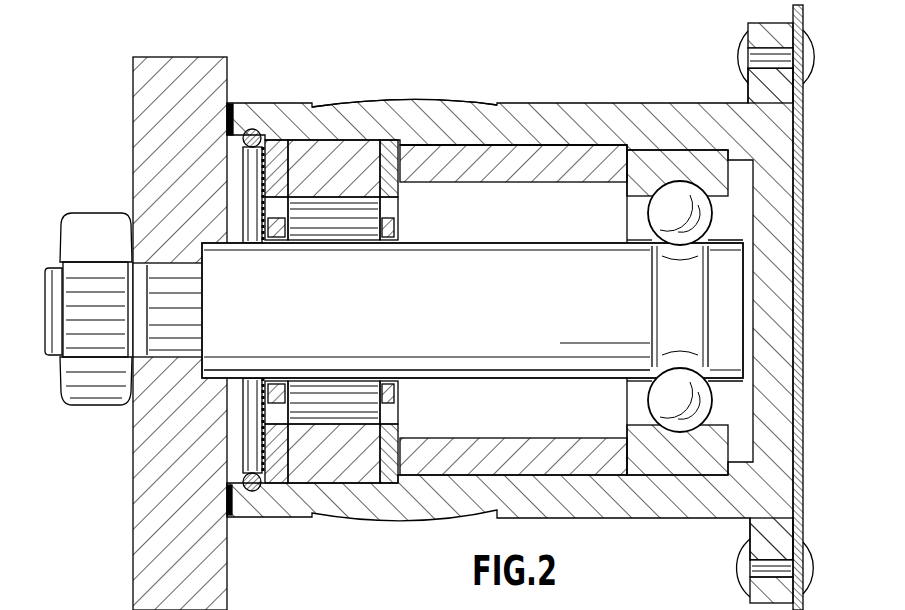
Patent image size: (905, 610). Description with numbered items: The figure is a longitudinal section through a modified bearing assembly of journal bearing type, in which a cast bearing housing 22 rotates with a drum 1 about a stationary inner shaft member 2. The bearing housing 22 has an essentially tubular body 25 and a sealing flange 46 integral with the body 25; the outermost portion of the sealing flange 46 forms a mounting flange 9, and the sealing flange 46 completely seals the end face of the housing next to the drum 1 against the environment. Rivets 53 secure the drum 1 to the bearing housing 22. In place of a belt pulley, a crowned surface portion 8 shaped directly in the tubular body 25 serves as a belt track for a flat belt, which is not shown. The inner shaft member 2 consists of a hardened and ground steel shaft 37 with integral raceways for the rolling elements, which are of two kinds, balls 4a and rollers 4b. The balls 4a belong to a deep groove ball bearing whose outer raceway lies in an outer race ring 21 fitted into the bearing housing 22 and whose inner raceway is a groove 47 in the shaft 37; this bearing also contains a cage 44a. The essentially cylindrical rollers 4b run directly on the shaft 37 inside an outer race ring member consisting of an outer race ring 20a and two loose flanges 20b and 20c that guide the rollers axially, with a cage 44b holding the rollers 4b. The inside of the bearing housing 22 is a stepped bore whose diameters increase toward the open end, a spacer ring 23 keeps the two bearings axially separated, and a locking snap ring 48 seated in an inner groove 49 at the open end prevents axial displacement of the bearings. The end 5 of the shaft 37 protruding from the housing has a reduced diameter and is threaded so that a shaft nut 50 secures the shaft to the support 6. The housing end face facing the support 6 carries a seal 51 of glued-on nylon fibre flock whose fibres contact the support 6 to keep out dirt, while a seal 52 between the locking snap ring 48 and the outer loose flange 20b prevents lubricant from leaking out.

The drum 1 is at (806, 196).
The inner shaft member 2 is at (565, 381).
The balls 4a is at (683, 210).
The rollers 4b is at (362, 410).
The end of the shaft 5 is at (55, 282).
The support 6 is at (135, 529).
The surface portion 8 is at (372, 97).
The mounting flange 9 is at (767, 35).
The outer race ring 20a is at (337, 165).
The loose flange 20b is at (272, 160).
The loose flange 20c is at (425, 150).
The outer race ring 21 is at (708, 163).
The bearing housing 22 is at (539, 123).
The spacer ring 23 is at (498, 163).
The tubular body 25 is at (588, 110).
The steel shaft 37 is at (607, 333).
The cage 44a is at (640, 445).
The cage 44b is at (392, 165).
The sealing flange 46 is at (775, 107).
The groove 47 is at (693, 280).
The locking snap ring 48 is at (252, 492).
The inner groove 49 is at (265, 490).
The shaft nut 50 is at (88, 228).
The seal 51 is at (232, 103).
The seal 52 is at (262, 441).
The rivets 53 is at (737, 59).